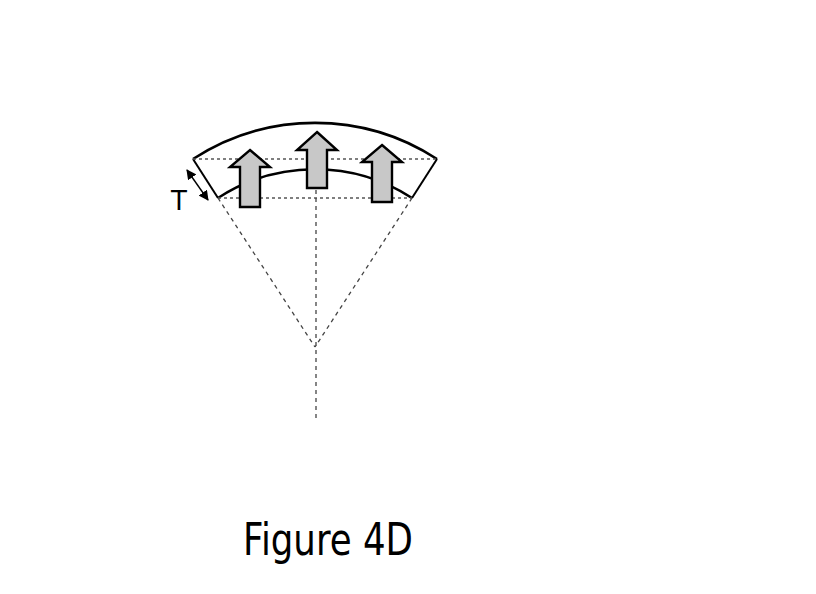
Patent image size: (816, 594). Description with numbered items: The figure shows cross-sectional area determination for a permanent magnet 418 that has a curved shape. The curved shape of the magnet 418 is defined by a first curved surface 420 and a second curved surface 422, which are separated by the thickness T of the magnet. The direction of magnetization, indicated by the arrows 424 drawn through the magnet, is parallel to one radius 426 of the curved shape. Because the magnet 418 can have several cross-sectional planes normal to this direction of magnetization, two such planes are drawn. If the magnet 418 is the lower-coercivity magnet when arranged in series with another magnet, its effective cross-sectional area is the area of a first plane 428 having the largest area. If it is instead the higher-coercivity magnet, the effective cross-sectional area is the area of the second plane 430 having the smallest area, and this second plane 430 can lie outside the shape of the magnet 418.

The magnet 418 is at (124, 96).
The first curved surface 420 is at (270, 128).
The second curved surface 422 is at (284, 178).
The arrows 424 is at (330, 137).
The radius 426 is at (318, 272).
The first plane 428 is at (360, 150).
The second plane 430 is at (343, 208).